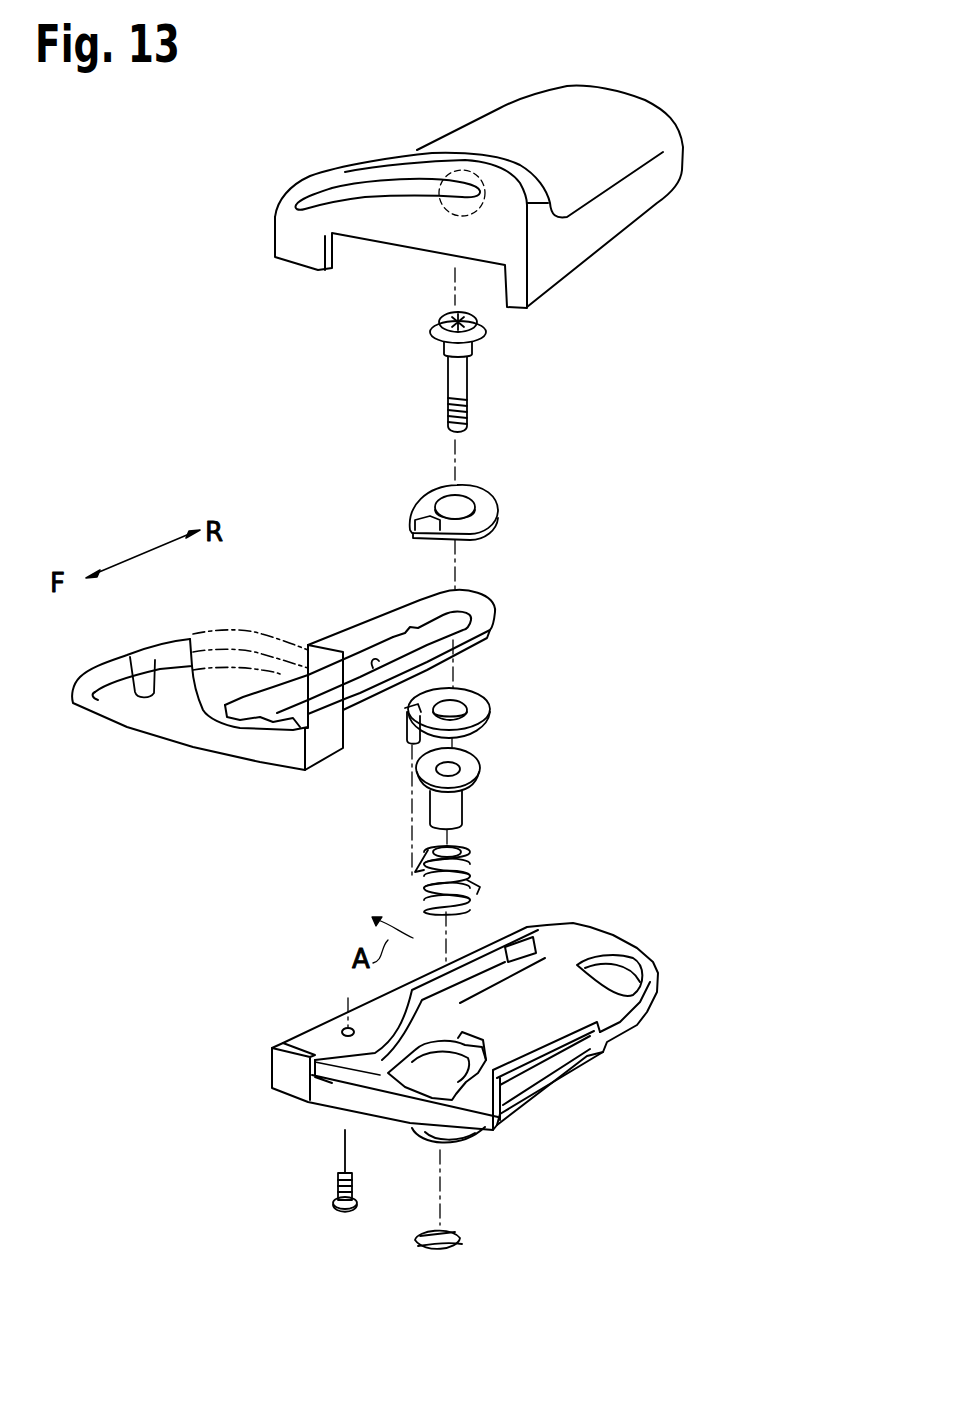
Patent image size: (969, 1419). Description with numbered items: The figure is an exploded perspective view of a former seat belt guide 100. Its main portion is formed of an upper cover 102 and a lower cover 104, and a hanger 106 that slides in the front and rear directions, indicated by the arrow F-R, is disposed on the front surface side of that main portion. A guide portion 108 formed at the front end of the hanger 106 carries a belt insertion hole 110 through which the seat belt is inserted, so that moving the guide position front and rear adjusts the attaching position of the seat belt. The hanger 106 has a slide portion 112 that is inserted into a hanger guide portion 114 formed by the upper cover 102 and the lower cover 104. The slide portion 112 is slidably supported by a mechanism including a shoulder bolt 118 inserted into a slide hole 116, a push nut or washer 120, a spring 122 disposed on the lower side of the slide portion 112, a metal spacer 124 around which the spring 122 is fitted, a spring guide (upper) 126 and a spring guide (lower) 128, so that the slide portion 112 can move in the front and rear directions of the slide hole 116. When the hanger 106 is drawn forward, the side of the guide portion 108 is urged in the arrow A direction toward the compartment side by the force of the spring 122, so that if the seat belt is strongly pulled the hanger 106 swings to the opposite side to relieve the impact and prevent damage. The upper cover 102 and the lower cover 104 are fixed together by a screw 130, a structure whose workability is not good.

The seat belt guide 100 is at (376, 98).
The upper cover 102 is at (523, 125).
The lower cover 104 is at (635, 1026).
The hanger 106 is at (312, 639).
The guide portion 108 is at (187, 640).
The belt insertion hole 110 is at (131, 668).
The slide portion 112 is at (367, 630).
The hanger guide portion 114 is at (349, 1076).
The slide hole 116 is at (373, 668).
The shoulder bolt 118 is at (470, 386).
The push nut (washer) 120 is at (474, 1227).
The spring 122 is at (470, 868).
The metal spacer 124 is at (482, 776).
The spring guide (upper) 126 is at (487, 505).
The spring guide (lower) 128 is at (487, 716).
The screw 130 is at (336, 1192).